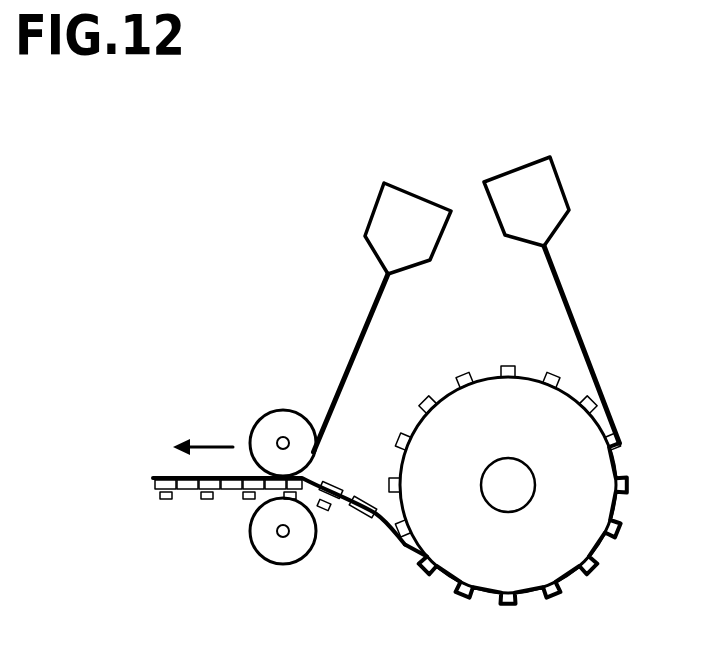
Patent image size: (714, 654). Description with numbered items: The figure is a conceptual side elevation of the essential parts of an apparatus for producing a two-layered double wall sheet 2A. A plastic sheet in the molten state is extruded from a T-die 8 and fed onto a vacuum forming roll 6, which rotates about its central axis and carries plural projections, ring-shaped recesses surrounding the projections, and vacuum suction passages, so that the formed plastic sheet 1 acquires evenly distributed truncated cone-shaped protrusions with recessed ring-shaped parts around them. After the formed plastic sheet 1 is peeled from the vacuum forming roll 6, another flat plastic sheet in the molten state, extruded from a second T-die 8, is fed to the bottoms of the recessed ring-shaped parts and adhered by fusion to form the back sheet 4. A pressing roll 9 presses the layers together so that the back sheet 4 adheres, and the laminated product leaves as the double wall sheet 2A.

The plastic sheet 1 is at (223, 497).
The two-layered double wall sheet 2A is at (166, 470).
The back sheet 4 is at (242, 477).
The vacuum forming roll 6 is at (457, 410).
The T-die 8 is at (395, 229).
The pressing roll 9 is at (276, 428).